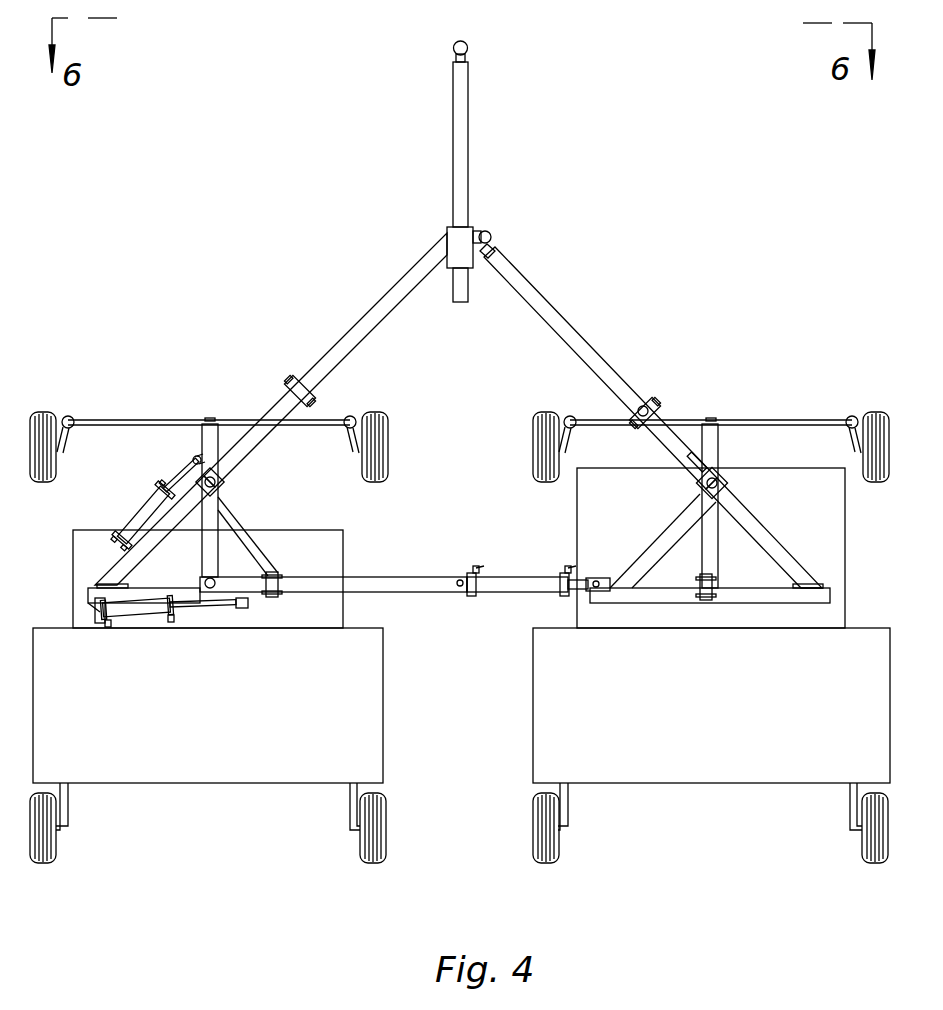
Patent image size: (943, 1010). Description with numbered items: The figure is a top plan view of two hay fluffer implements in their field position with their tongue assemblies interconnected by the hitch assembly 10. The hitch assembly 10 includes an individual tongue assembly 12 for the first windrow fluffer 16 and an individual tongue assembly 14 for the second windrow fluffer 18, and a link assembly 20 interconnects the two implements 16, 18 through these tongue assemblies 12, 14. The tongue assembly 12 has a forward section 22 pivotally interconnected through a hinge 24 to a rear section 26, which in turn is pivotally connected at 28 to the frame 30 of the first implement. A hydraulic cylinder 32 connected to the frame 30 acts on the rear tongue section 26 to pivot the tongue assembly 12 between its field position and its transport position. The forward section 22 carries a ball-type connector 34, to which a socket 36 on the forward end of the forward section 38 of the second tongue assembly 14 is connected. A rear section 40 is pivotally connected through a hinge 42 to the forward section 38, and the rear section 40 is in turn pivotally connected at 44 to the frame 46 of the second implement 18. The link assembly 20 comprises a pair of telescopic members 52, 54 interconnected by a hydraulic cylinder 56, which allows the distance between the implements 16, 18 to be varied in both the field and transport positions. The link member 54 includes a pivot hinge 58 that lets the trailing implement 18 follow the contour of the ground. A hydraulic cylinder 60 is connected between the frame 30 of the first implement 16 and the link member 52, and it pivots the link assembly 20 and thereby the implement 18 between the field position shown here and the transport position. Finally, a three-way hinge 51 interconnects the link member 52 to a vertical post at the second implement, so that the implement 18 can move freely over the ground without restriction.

The hitch assembly 10 is at (466, 127).
The tongue assembly 12 is at (325, 360).
The tongue assembly 14 is at (600, 368).
The windrow fluffer 16 is at (381, 692).
The windrow fluffer 18 is at (529, 672).
The link assembly 20 is at (459, 577).
The forward section 22 is at (370, 308).
The hinge 24 is at (290, 383).
The rear section 26 is at (257, 430).
The pivotal connection 28 is at (217, 482).
The frame 30 is at (103, 568).
The hydraulic cylinder 32 is at (138, 503).
The ball-type connector 34 is at (526, 228).
The socket 36 is at (489, 231).
The forward section 38 is at (590, 340).
The rear section 40 is at (665, 440).
The hinge 42 is at (655, 400).
The pivotal connection 44 is at (713, 477).
The frame 46 is at (765, 540).
The three-way hinge 51 is at (705, 600).
The telescopic member 52 is at (668, 580).
The telescopic member 54 is at (375, 571).
The hydraulic cylinder 56 is at (523, 596).
The pivot hinge 58 is at (273, 570).
The hydraulic cylinder 60 is at (137, 617).